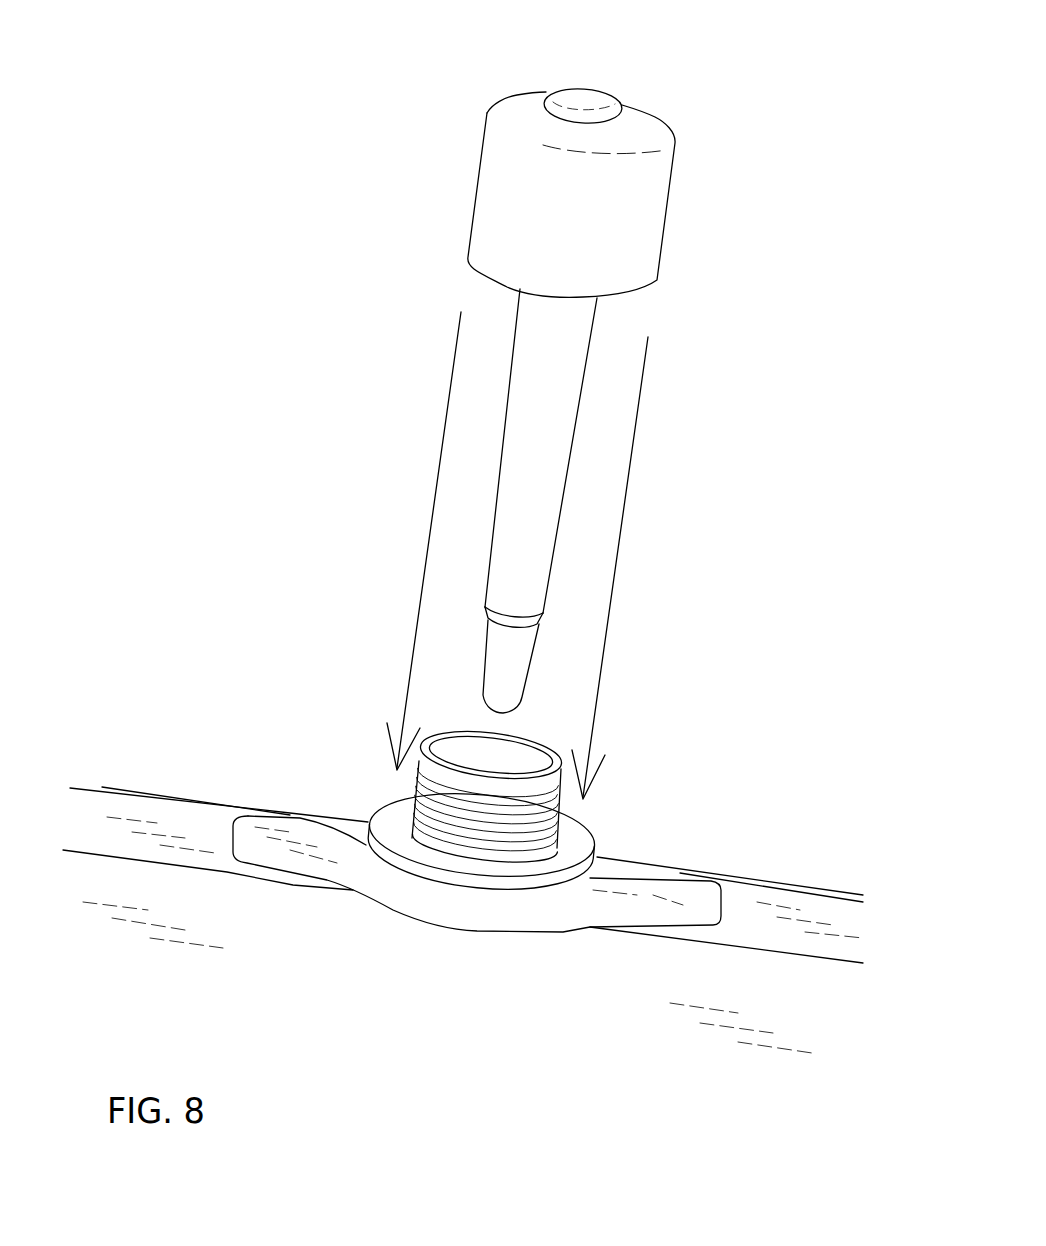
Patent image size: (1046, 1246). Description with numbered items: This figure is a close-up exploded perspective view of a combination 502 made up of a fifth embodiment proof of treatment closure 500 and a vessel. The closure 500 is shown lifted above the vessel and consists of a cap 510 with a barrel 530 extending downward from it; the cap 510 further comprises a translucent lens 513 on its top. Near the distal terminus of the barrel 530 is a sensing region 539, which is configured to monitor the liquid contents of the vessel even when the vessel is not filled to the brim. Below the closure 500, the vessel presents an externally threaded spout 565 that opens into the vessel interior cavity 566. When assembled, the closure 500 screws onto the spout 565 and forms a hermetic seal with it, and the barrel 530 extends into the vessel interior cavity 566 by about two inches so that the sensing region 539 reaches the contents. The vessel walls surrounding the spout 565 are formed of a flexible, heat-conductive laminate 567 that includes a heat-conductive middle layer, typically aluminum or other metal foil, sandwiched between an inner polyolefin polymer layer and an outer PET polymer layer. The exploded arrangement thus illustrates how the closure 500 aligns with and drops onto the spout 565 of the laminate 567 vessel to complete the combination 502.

The proof of treatment closure 500 is at (688, 353).
The combination 502 is at (252, 243).
The cap 510 is at (665, 223).
The translucent lens 513 is at (588, 92).
The barrel 530 is at (568, 473).
The sensing region 539 is at (525, 677).
The threaded spout 565 is at (423, 757).
The vessel interior cavity 566 is at (485, 752).
The heat-conductive laminate 567 is at (430, 1026).